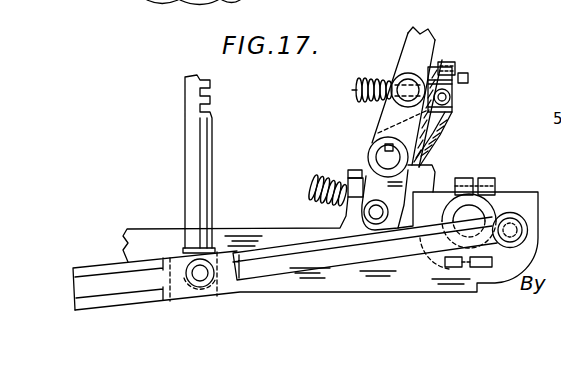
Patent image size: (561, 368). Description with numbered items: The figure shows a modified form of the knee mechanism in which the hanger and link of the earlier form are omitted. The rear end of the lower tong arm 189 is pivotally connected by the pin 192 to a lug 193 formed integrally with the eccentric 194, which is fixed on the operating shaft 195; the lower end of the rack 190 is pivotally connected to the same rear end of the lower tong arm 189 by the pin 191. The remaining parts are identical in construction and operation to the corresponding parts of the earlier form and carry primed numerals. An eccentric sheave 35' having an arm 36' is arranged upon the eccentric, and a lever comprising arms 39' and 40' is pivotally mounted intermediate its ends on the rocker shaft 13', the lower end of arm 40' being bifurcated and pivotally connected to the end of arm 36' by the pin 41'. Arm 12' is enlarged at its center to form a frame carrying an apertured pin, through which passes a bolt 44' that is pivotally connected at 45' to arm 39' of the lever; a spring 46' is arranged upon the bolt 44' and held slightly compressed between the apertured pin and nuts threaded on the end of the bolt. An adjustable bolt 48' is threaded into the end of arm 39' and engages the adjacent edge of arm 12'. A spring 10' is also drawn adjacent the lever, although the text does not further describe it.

The rack 190 is at (188, 137).
The arm 12' is at (407, 91).
The bolt 44' is at (375, 93).
The spring 46' is at (368, 77).
The adjustable bolt 48' is at (459, 56).
The arm 39' is at (458, 117).
The pivotal connection 45' is at (469, 91).
The rocker shaft 13' is at (368, 156).
The spring 10' is at (312, 191).
The arm 40' is at (335, 199).
The pin 41' is at (349, 218).
The arm 36' is at (386, 229).
The eccentric 194 is at (458, 207).
The lug 193 is at (489, 183).
The pin 192 is at (511, 228).
The pin 191 is at (207, 280).
The lower tong arm 189 is at (281, 268).
The operating shaft 195 is at (430, 259).
The eccentric sheave 35' is at (473, 291).